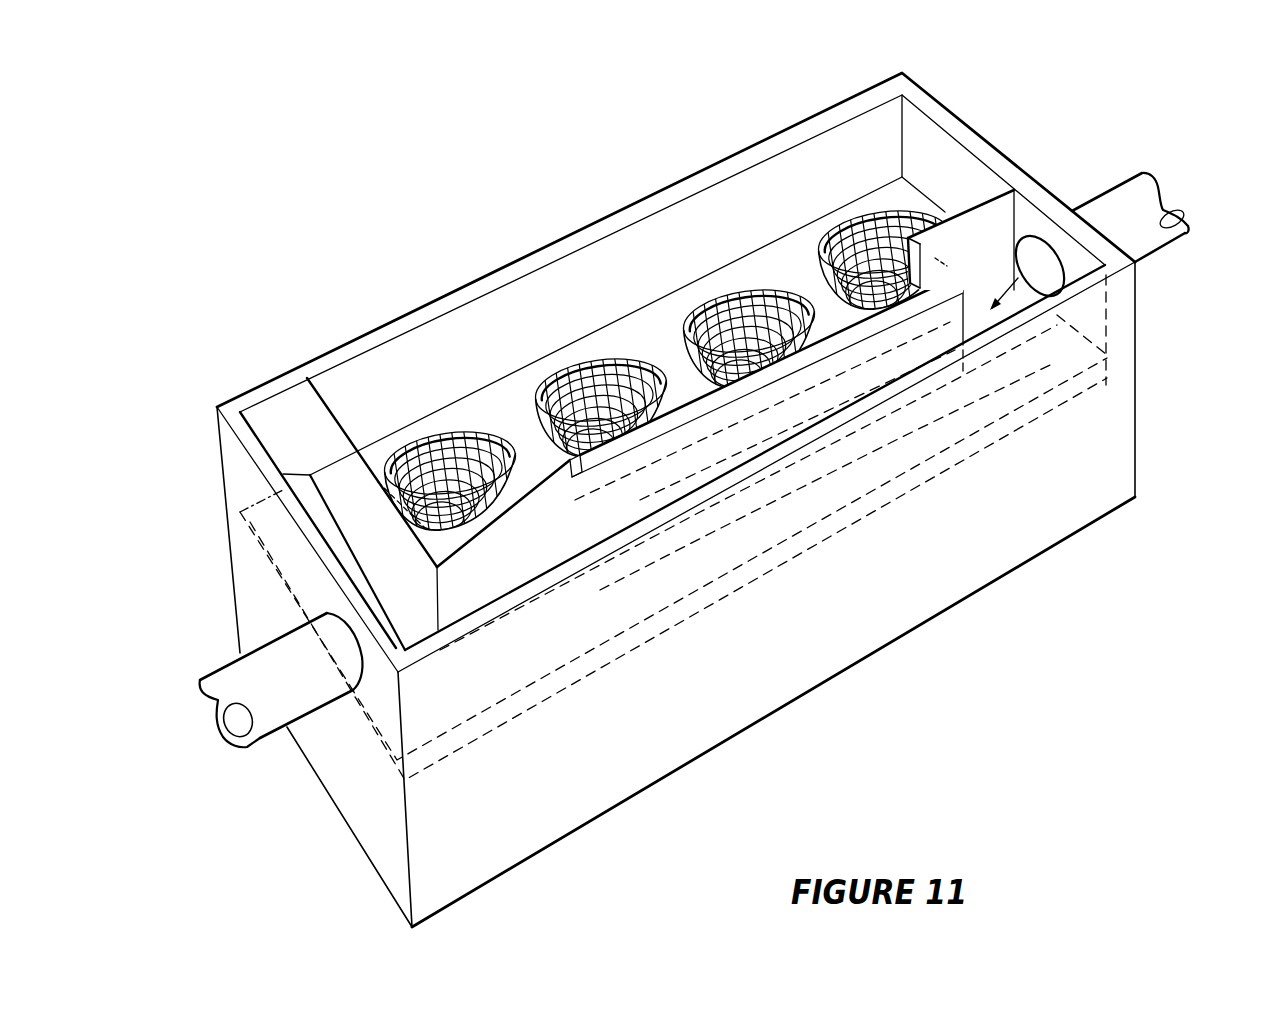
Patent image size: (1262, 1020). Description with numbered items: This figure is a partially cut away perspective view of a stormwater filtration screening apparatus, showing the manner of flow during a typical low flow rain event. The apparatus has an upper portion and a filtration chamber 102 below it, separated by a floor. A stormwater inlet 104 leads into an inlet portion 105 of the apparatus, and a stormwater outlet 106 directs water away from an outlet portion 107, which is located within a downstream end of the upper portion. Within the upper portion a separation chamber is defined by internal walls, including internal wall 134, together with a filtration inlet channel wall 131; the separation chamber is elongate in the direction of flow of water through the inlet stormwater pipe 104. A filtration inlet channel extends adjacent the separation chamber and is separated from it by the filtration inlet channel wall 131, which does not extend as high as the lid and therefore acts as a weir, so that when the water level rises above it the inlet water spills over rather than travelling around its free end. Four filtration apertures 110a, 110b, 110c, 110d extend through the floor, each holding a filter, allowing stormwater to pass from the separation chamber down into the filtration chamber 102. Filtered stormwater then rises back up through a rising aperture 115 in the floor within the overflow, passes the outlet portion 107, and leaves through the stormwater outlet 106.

The filtration chamber 102 is at (909, 511).
The stormwater inlet 104 is at (1102, 210).
The inlet portion 105 is at (1060, 275).
The stormwater outlet 106 is at (247, 680).
The outlet portion 107 is at (291, 450).
The filtration aperture 110a is at (437, 450).
The filtration aperture 110b is at (590, 405).
The filtration aperture 110c is at (747, 322).
The filtration aperture 110d is at (877, 260).
The rising aperture 115 is at (745, 513).
The filtration inlet channel wall 131 is at (707, 397).
The internal wall 134 is at (997, 222).